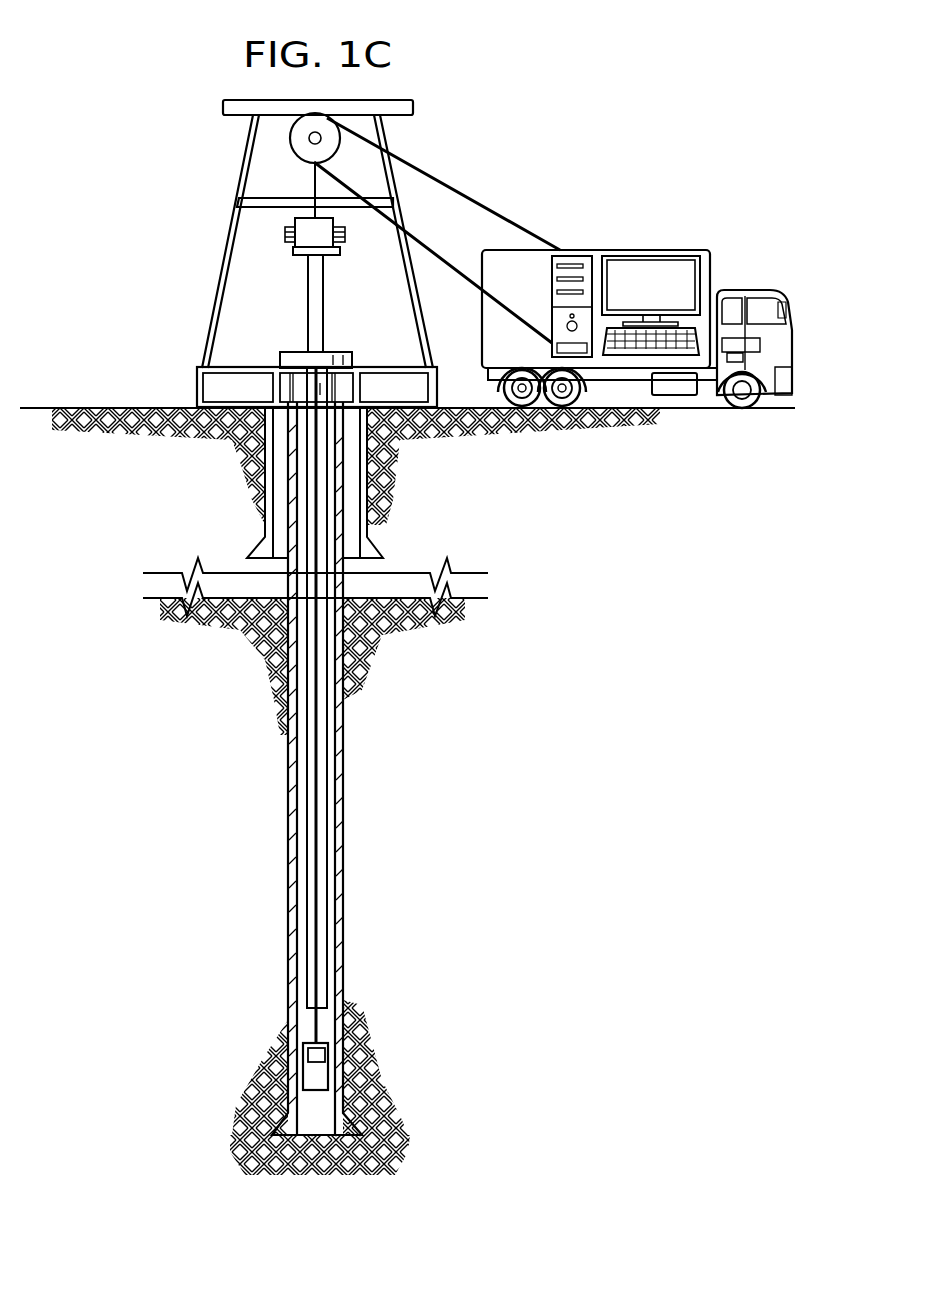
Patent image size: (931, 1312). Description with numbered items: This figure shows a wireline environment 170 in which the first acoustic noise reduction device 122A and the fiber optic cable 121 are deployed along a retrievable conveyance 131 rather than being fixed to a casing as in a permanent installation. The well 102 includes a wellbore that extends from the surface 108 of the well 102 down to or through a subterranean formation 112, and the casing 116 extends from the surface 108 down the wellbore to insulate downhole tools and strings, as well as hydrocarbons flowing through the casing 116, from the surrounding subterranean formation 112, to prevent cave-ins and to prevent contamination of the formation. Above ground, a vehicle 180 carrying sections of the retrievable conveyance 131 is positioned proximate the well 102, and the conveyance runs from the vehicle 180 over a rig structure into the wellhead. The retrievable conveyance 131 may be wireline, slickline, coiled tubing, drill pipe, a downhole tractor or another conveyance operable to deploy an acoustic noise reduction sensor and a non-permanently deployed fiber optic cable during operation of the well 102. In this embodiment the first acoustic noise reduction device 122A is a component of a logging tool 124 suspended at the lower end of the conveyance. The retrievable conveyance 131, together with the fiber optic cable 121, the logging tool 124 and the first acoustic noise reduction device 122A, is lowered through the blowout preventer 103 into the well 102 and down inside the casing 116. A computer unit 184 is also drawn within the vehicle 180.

The wireline environment 170 is at (131, 64).
The retrievable conveyance 131 is at (312, 177).
The blowout preventer 103 is at (307, 288).
The well 102 is at (346, 340).
The surface 108 is at (98, 407).
The computer 184 is at (570, 250).
The vehicle 180 is at (630, 250).
The subterranean formation 112 is at (597, 662).
The casing 116 is at (340, 805).
The fiber optic cable 121 is at (310, 1021).
The first acoustic noise reduction device 122A is at (308, 1052).
The logging tool 124 is at (317, 1074).